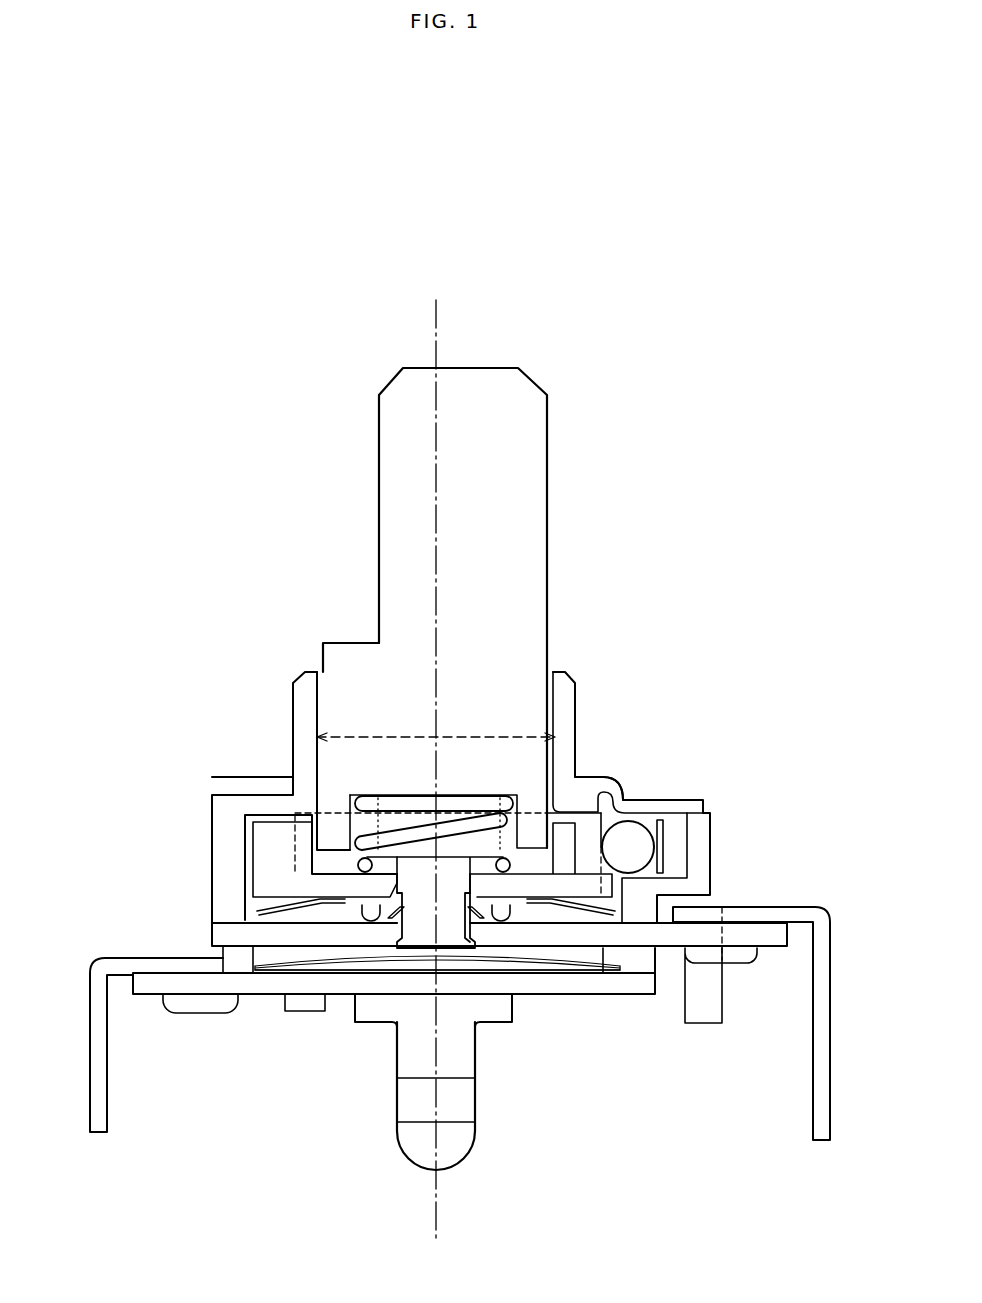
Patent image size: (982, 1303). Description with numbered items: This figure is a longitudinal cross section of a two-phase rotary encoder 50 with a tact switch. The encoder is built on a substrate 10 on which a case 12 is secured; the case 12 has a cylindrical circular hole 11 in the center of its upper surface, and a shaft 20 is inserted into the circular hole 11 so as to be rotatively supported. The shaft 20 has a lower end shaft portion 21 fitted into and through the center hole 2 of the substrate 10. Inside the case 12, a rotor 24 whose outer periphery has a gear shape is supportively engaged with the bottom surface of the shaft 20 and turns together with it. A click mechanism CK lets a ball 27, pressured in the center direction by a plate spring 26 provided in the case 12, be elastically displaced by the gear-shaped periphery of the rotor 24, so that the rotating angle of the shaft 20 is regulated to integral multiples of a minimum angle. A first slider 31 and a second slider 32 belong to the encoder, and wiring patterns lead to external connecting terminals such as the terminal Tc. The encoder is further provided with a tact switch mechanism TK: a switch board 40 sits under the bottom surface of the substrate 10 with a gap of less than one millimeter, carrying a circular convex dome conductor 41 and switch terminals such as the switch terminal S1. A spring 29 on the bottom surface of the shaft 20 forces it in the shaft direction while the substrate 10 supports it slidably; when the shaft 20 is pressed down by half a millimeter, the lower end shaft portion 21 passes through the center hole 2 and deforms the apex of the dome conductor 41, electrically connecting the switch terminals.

The two-phase rotary encoder 50 is at (449, 291).
The shaft 20 is at (547, 605).
The circular hole 11 is at (362, 735).
The case 12 is at (218, 842).
The rotor 24 is at (273, 840).
The spring 29 is at (353, 793).
The click mechanism CK is at (620, 782).
The ball 27 is at (633, 835).
The plate spring 26 is at (661, 832).
The first slider 31 is at (257, 910).
The second slider 32 is at (538, 906).
The substrate 10 is at (223, 935).
The lower end shaft portion 21 is at (472, 997).
The center hole 2 is at (395, 997).
The switch board 40 is at (263, 988).
The dome conductor 41 is at (320, 970).
The tact switch mechanism TK is at (351, 1036).
The switch terminal S1 is at (108, 1088).
The external connecting terminal Tc is at (815, 1100).